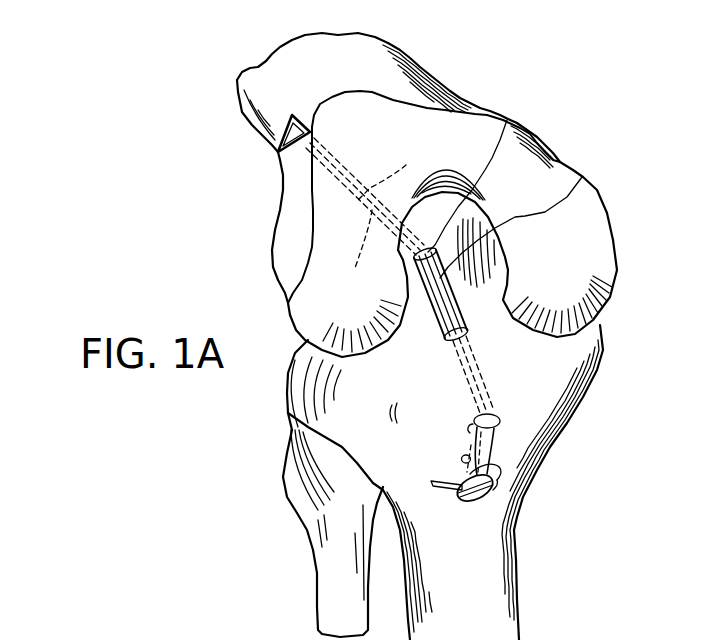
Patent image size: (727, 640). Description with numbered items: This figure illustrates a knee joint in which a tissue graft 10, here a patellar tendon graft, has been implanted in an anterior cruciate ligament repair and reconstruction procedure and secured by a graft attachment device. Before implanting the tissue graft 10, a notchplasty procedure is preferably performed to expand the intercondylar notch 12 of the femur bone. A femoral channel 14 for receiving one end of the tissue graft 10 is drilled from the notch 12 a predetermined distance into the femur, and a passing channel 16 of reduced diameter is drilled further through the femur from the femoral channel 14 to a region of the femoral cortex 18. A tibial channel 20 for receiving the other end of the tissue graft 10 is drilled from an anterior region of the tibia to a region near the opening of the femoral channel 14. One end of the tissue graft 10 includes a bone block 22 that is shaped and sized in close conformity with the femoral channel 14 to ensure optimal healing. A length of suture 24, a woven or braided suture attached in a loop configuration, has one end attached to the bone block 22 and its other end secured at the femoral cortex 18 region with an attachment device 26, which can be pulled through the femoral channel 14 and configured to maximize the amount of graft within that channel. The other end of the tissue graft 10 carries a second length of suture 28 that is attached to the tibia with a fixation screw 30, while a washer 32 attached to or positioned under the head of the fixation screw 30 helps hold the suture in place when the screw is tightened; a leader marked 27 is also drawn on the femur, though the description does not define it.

The tissue graft 10 is at (582, 177).
The intercondylar notch 12 is at (499, 266).
The femoral channel 14 is at (507, 120).
The passing channel 16 is at (352, 195).
The femoral cortex 18 is at (266, 101).
The tibial channel 20 is at (500, 423).
The bone block 22 is at (355, 257).
The suture 24 is at (391, 166).
The attachment device 26 is at (300, 102).
The medial femoral condyle 27 is at (300, 158).
The second length of suture 28 is at (462, 456).
The fixation screw 30 is at (475, 505).
The washer 32 is at (500, 483).